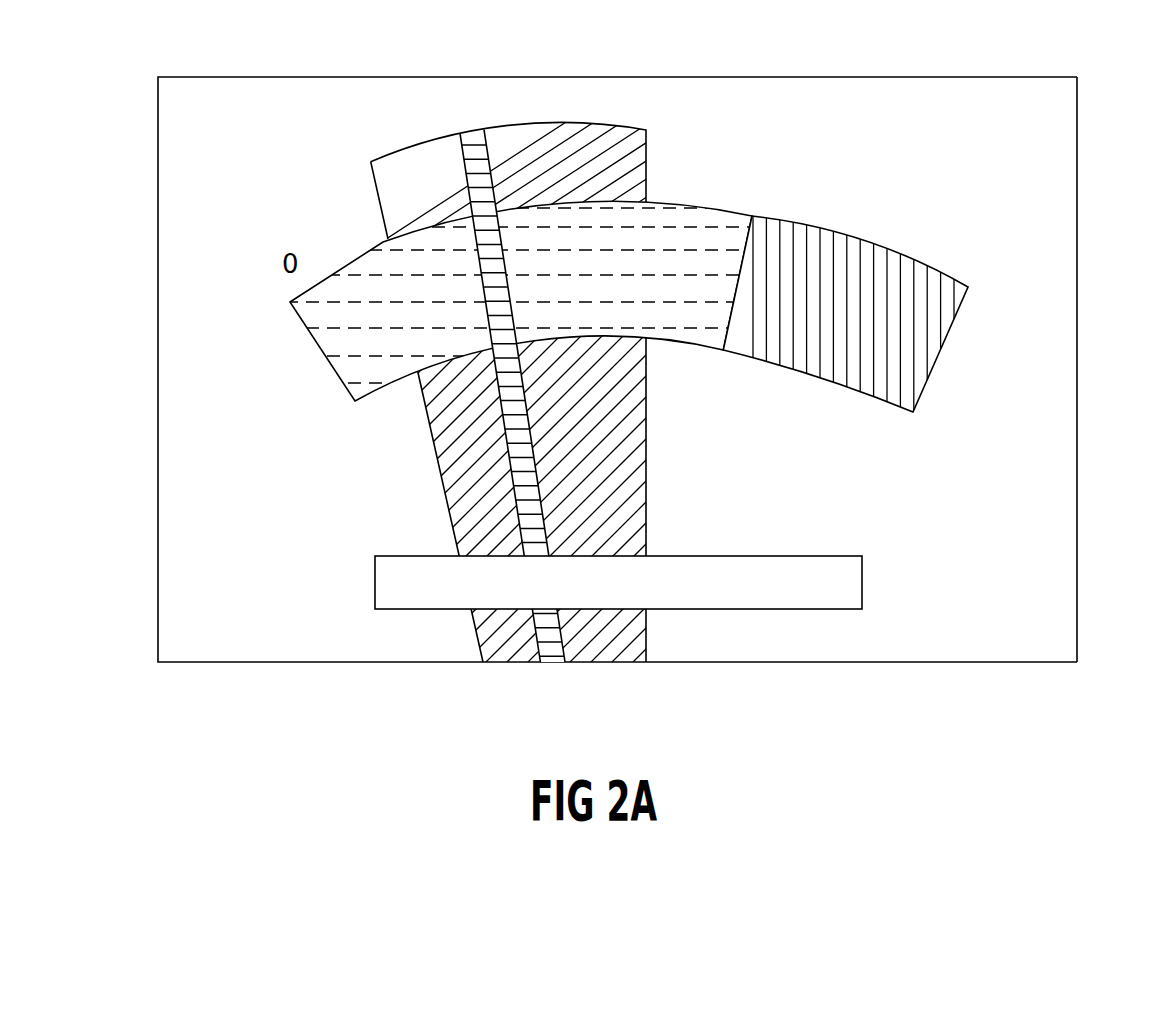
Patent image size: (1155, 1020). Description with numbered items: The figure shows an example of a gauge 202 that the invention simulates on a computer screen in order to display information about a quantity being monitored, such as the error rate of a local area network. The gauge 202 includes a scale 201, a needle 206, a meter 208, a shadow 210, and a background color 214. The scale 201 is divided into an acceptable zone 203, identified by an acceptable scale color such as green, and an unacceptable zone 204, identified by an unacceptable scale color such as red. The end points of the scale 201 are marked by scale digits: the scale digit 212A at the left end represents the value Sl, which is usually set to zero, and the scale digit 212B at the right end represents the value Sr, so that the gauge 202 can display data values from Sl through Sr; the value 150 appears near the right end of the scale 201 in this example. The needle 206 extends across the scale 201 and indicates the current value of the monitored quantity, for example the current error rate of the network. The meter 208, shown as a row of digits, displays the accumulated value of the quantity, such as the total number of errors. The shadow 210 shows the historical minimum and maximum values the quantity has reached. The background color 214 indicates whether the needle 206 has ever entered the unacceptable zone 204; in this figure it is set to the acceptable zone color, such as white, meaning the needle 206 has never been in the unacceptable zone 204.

The indicator position 150 is at (966, 246).
The scale 201 is at (282, 374).
The gauge 202 is at (866, 663).
The acceptable zone 203 is at (686, 207).
The unacceptable zone 204 is at (806, 223).
The needle 206 is at (557, 642).
The meter 208 is at (862, 589).
The shadow 210 is at (646, 430).
The scale digit 212A is at (321, 250).
The scale digit 212B is at (980, 217).
The background color 214 is at (1057, 350).